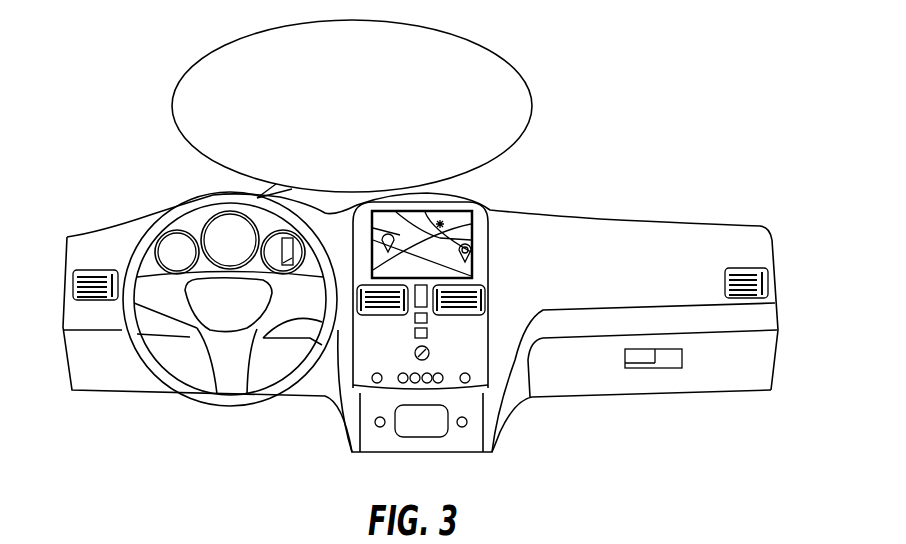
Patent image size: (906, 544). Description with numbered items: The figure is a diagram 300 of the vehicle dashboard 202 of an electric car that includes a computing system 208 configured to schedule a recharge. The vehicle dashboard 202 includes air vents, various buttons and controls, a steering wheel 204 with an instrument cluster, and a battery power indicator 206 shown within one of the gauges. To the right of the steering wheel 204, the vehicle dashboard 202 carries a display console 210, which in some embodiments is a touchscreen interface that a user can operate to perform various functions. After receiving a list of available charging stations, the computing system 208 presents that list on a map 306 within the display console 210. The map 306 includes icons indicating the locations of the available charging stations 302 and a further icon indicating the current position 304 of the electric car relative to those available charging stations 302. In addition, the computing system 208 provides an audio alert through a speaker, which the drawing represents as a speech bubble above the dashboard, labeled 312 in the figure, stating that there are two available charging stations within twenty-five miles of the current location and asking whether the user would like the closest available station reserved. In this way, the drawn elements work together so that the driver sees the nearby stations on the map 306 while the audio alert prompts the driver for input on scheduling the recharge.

The diagram 300 is at (112, 52).
The vehicle dashboard 202 is at (105, 228).
The steering wheel 204 is at (182, 203).
The battery power indicator 206 is at (268, 232).
The computing system 208 is at (512, 248).
The display console 210 is at (470, 232).
The available charging stations 302 is at (470, 254).
The current position 304 is at (443, 222).
The map 306 is at (460, 242).
The spoken notification message 312 is at (487, 72).